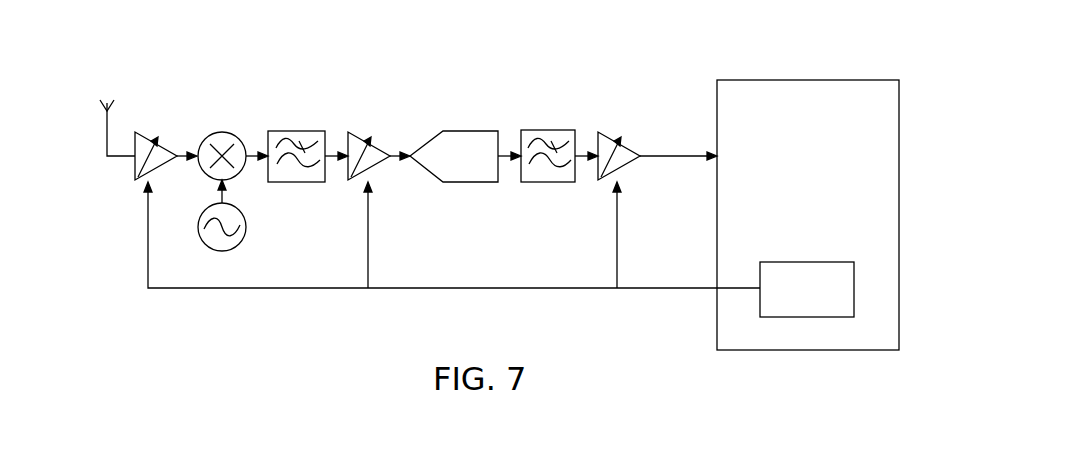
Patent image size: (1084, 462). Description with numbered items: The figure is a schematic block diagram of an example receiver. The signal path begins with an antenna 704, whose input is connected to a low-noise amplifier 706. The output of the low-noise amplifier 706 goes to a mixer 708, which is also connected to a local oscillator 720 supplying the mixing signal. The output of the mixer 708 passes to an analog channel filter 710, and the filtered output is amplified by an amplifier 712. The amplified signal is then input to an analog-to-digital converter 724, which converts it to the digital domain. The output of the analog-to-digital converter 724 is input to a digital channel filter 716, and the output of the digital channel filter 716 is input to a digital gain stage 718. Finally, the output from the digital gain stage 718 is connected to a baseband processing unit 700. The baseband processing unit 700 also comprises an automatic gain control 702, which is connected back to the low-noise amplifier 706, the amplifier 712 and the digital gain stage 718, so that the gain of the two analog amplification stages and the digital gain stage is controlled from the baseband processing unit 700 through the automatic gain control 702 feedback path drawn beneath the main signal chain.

The baseband processing unit 700 is at (805, 80).
The automatic gain control 702 is at (783, 262).
The antenna 704 is at (107, 101).
The amplifier (LNA) 706 is at (150, 130).
The mixer 708 is at (227, 131).
The analog channel filter 710 is at (302, 131).
The amplifier 712 is at (363, 130).
The digital channel filter 716 is at (550, 130).
The digital gain stage 718 is at (613, 131).
The local oscillator 720 is at (246, 232).
The analog-to-digital converter 724 is at (469, 131).